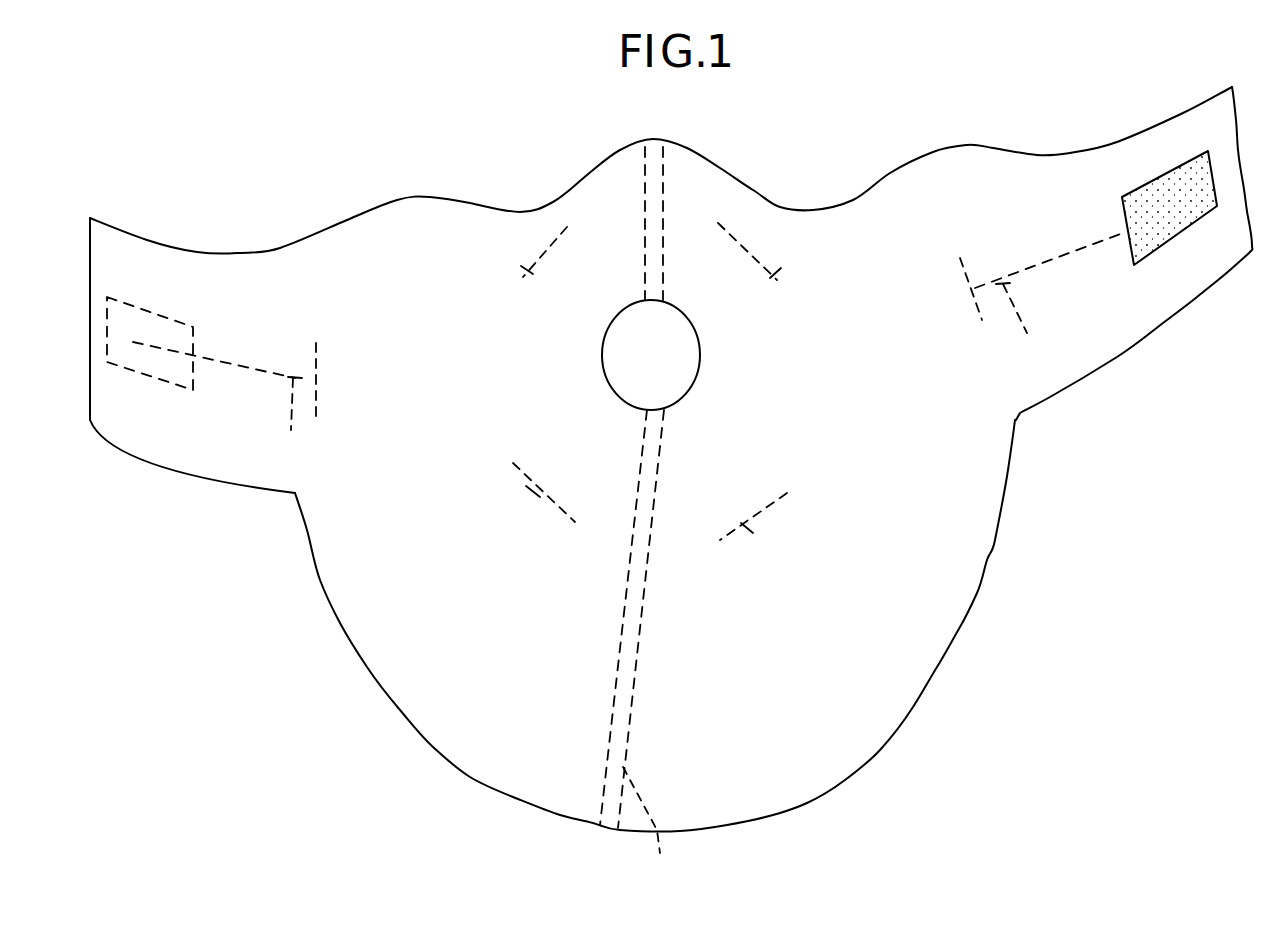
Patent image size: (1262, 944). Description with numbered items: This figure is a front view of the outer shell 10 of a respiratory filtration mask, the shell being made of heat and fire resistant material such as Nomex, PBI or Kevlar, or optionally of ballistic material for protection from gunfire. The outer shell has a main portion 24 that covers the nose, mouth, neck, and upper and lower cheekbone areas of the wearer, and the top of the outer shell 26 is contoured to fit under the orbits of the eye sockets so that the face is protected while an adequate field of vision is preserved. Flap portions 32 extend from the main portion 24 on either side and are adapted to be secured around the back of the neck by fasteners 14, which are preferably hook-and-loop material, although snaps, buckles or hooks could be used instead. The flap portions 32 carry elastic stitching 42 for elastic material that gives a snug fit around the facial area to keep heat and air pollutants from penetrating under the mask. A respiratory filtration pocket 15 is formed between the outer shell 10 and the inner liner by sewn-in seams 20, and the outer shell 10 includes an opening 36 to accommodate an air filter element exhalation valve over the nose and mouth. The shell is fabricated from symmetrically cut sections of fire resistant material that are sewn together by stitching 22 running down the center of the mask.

The outer shell 10 is at (500, 655).
The fasteners 14 is at (172, 320).
The respiratory filtration pocket 15 is at (611, 250).
The sewn-in seams 20 is at (792, 557).
The stitching 22 is at (635, 475).
The main portion 24 is at (727, 825).
The top of the outer shell 26 is at (858, 197).
The flap portions 32 is at (190, 455).
The opening 36 is at (682, 380).
The elastic stitching 42 is at (655, 362).